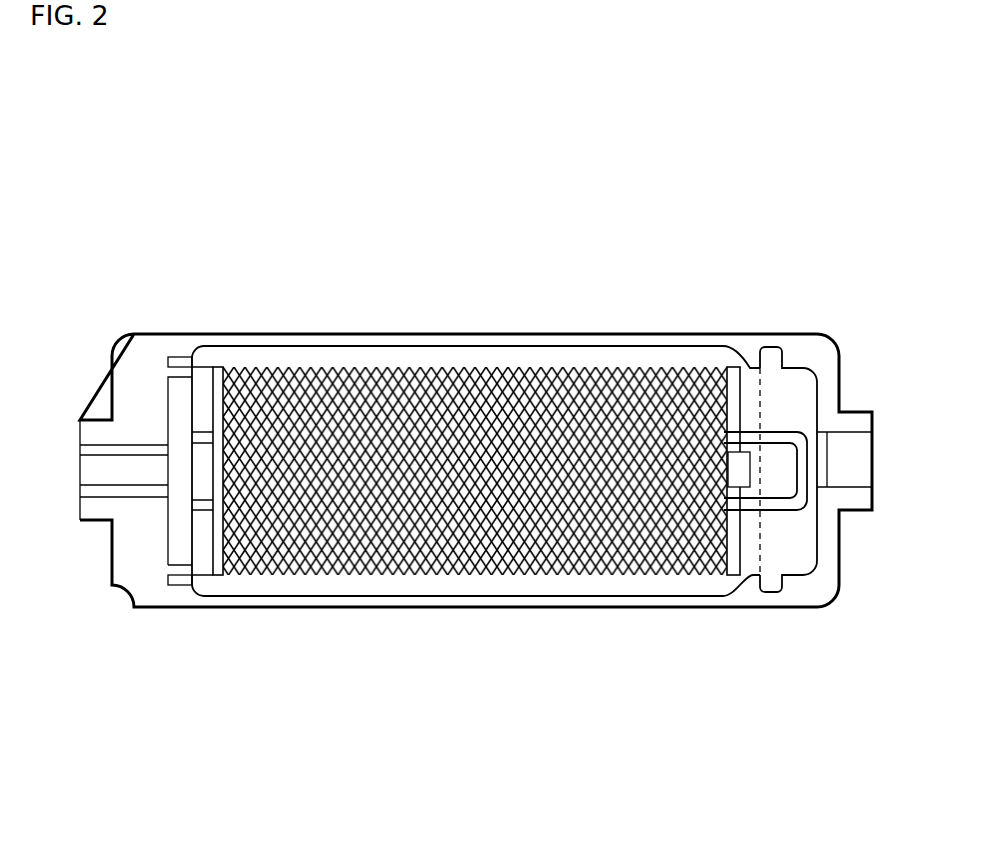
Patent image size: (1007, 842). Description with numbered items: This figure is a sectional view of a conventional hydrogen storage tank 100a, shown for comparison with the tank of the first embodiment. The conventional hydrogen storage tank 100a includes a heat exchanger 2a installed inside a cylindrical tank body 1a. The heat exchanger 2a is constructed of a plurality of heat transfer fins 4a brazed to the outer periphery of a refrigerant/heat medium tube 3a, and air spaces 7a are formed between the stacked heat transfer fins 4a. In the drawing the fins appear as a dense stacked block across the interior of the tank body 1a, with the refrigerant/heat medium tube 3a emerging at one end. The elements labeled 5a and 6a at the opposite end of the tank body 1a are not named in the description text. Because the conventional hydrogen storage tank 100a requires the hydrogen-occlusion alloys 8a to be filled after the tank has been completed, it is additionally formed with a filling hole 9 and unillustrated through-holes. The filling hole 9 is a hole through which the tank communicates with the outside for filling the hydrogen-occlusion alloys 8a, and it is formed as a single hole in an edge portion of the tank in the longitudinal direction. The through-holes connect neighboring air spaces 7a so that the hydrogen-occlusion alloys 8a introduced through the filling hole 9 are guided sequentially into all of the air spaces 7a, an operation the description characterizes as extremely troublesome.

The conventional hydrogen storage tank 100a is at (675, 293).
The cylindrical tank body 1a is at (432, 335).
The heat exchanger 2a is at (800, 685).
The refrigerant/heat medium tube 3a is at (797, 503).
The heat transfer fins 4a is at (678, 560).
The holder 5a is at (148, 442).
The inlet pipe 6a is at (148, 498).
The air spaces 7a is at (363, 553).
The hydrogen-occlusion alloys 8a is at (310, 547).
The filling hole 9 is at (743, 463).